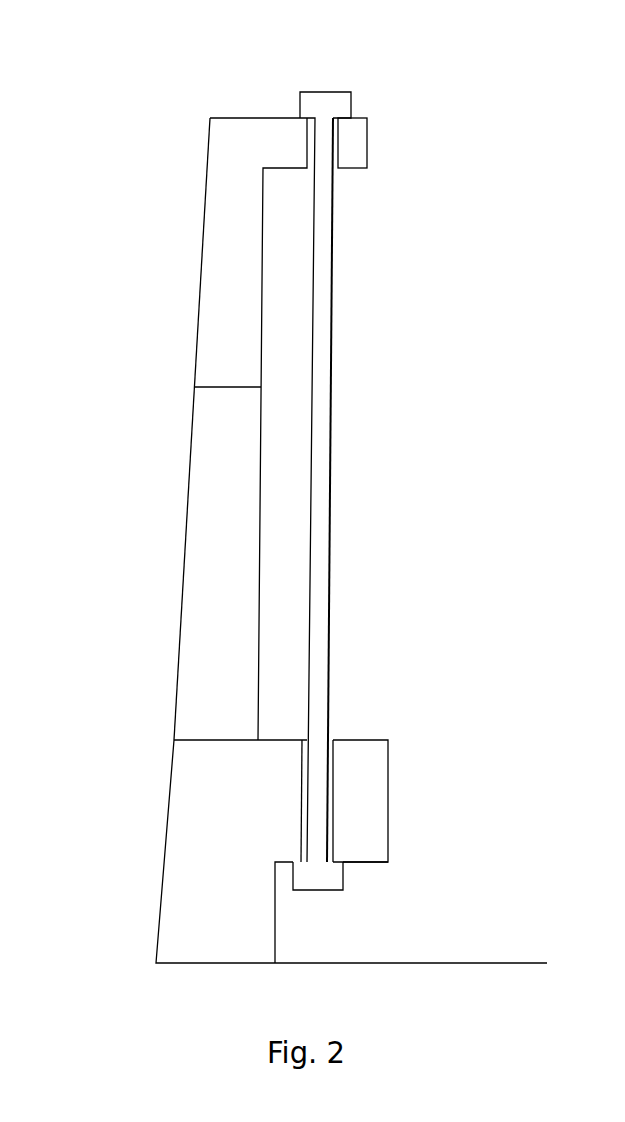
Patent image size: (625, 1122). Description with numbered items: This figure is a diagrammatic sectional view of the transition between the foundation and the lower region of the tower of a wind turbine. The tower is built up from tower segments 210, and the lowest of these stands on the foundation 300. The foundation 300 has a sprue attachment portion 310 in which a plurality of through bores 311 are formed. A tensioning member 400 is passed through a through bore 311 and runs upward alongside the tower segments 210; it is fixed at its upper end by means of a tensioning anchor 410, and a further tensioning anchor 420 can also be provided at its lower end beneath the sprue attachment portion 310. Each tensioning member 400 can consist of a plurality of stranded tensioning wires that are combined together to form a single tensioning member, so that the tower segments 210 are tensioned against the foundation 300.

The tower segment 210 is at (200, 290).
The foundation 300 is at (163, 878).
The sprue attachment portion 310 is at (383, 818).
The through bore 311 is at (332, 740).
The tensioning member 400 is at (323, 490).
The tensioning anchor 410 is at (302, 88).
The tensioning anchor 420 is at (345, 893).